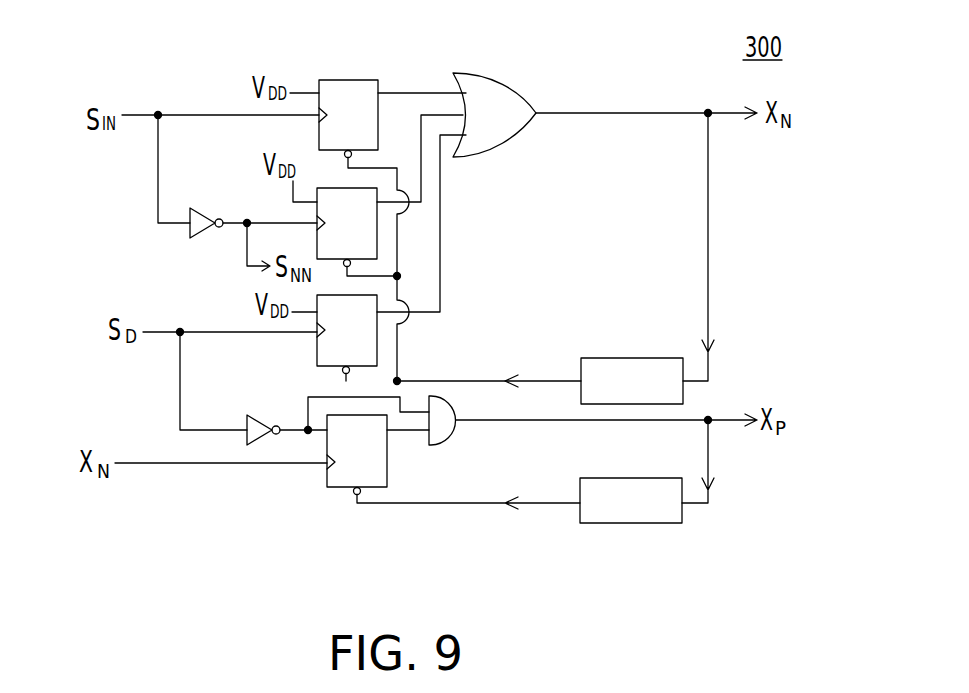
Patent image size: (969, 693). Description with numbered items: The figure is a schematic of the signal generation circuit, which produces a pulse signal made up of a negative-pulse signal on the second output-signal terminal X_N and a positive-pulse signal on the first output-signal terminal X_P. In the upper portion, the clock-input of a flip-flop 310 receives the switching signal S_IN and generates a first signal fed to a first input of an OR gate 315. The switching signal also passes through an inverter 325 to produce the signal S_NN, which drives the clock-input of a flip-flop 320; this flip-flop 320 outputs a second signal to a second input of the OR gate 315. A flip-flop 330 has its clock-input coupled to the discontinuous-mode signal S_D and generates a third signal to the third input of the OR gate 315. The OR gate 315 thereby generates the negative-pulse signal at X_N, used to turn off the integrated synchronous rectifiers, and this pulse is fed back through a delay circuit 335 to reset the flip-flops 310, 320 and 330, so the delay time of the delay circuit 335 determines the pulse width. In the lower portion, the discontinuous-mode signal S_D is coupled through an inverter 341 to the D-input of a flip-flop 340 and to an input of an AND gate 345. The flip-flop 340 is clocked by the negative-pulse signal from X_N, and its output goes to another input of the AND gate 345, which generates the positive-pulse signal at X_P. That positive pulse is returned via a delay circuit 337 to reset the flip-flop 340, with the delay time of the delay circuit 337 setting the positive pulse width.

The flip-flop 310 is at (348, 90).
The OR gate 315 is at (508, 128).
The flip-flop 320 is at (342, 197).
The inverter 325 is at (200, 213).
The flip-flop 330 is at (320, 352).
The delay circuit 335 is at (632, 358).
The delay circuit 337 is at (661, 523).
The flip-flop 340 is at (380, 455).
The inverter 341 is at (258, 416).
The AND gate 345 is at (448, 430).